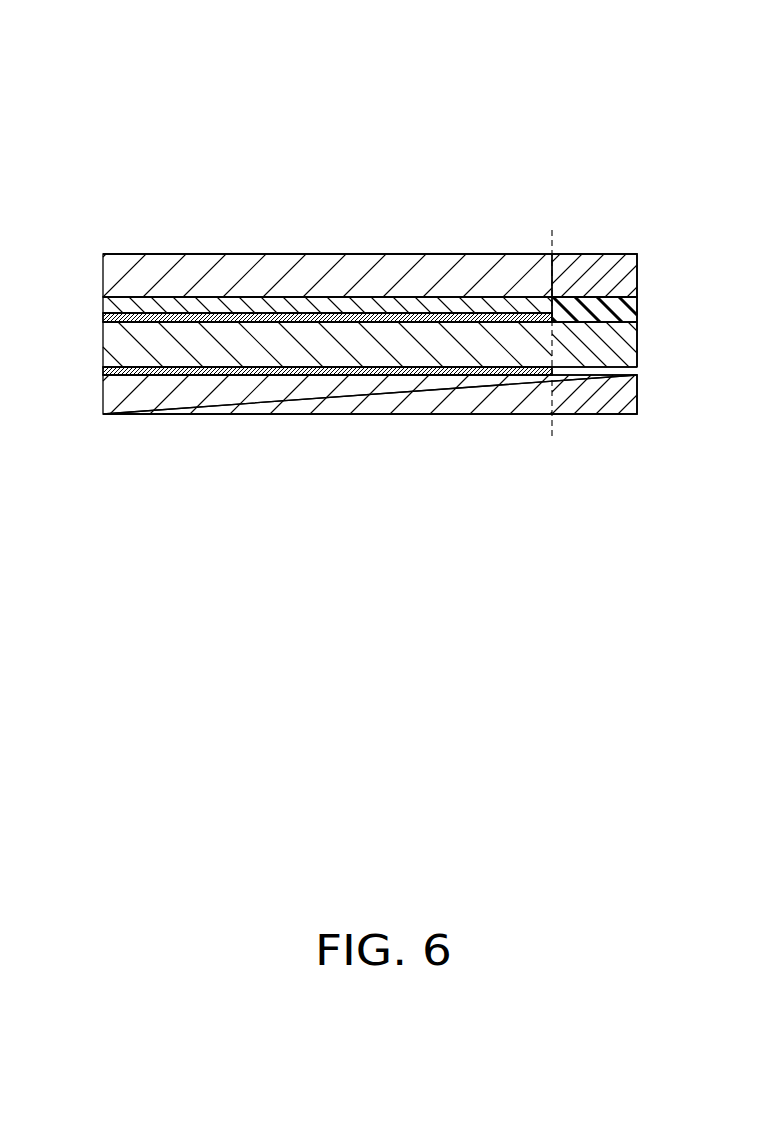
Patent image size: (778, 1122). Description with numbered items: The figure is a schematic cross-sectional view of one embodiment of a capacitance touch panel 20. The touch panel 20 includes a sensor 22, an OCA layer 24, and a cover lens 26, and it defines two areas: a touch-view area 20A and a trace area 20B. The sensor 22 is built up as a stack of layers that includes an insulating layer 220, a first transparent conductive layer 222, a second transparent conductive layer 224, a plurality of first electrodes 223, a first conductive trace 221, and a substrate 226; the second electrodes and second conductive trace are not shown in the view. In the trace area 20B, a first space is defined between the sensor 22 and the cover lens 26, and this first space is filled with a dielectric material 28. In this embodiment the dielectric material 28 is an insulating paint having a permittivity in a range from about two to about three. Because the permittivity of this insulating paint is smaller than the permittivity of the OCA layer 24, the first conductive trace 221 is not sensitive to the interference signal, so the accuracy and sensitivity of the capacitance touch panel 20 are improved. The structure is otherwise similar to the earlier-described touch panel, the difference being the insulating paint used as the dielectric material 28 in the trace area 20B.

The capacitance touch panel 20 is at (320, 54).
The touch-view area 20A is at (327, 296).
The trace area 20B is at (594, 326).
The sensor 22 is at (705, 230).
The OCA layer 24 is at (110, 302).
The cover lens 26 is at (112, 279).
The dielectric material 28 is at (640, 307).
The insulating layer 220 is at (603, 361).
The first conductive trace 221 is at (602, 288).
The first transparent conductive layer 222 is at (556, 324).
The first electrodes 223 is at (553, 297).
The second transparent conductive layer 224 is at (556, 369).
The substrate 226 is at (613, 402).